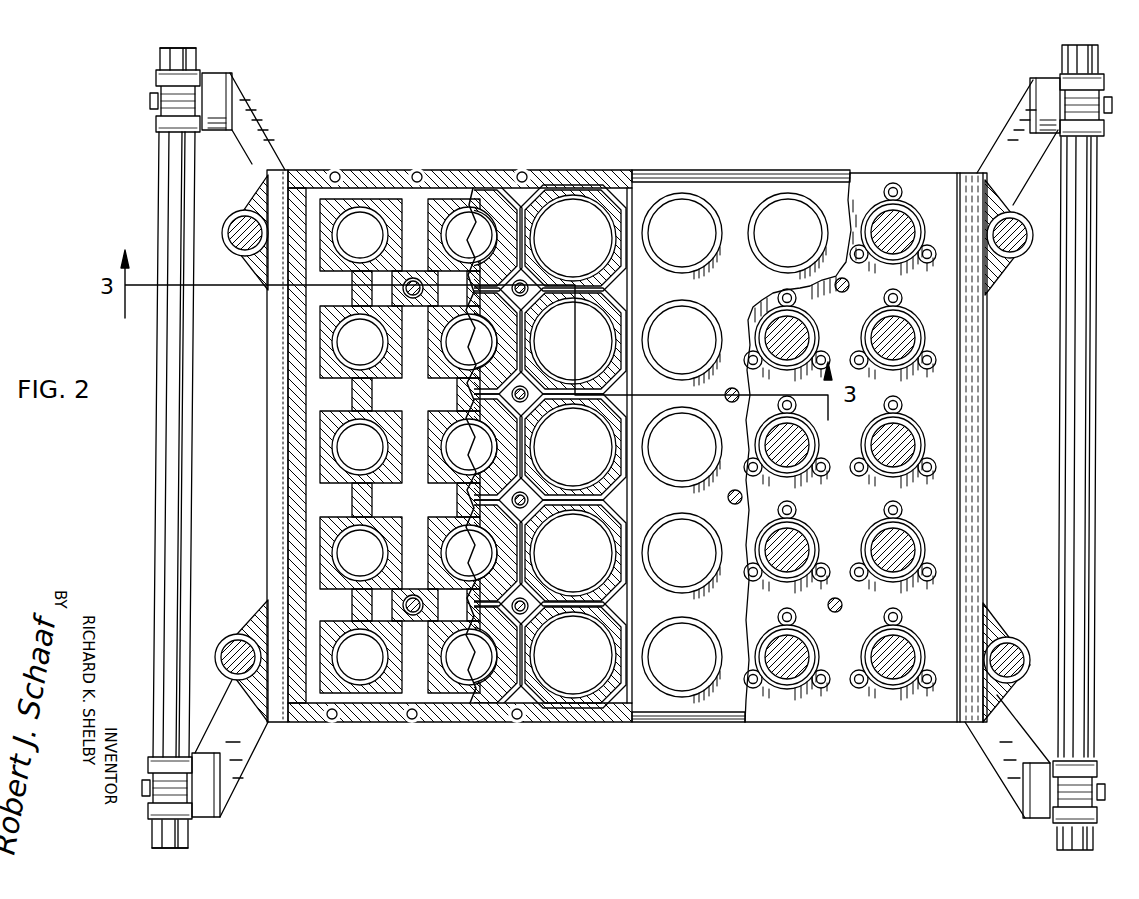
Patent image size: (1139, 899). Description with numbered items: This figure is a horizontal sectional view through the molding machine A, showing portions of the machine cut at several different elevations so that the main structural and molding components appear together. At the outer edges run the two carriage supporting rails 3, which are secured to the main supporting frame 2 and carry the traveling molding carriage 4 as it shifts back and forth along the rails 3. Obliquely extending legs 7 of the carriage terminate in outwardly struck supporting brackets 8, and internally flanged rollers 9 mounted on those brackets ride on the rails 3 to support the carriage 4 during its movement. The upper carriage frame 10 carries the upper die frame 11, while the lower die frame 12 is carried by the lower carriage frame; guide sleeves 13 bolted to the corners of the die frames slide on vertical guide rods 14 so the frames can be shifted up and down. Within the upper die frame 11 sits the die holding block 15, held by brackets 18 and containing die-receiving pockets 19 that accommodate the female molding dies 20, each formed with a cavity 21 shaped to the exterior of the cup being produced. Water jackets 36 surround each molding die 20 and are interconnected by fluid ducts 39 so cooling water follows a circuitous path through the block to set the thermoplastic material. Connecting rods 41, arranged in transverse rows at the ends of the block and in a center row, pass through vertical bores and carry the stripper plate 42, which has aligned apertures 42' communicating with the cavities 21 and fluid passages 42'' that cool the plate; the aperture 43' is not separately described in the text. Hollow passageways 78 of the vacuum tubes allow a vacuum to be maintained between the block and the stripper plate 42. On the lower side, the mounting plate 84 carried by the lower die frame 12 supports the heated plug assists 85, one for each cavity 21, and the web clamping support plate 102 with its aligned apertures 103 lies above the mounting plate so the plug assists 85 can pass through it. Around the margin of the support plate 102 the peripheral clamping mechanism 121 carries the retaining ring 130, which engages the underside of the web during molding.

The main supporting frame 2 is at (158, 596).
The carriage supporting rails 3 is at (157, 455).
The molding carriage 4 is at (989, 481).
The legs 7 is at (242, 70).
The supporting brackets 8 is at (222, 120).
The internally flanged rollers 9 is at (158, 80).
The upper carriage frame 10 is at (276, 383).
The upper die frame 11 is at (393, 168).
The lower die frame 12 is at (978, 348).
The guide sleeves 13 is at (238, 253).
The guide rods 14 is at (240, 216).
The die holding block 15 is at (346, 168).
The brackets 18 is at (258, 276).
The die-receiving pockets 19 is at (343, 456).
The molding dies 20 is at (478, 216).
The cavities 21 is at (468, 706).
The water jackets 36 is at (410, 206).
The fluid ducts 39 is at (312, 400).
The connecting rods 41 is at (413, 300).
The stripper plate 42 is at (568, 472).
The aligned apertures 42' is at (573, 477).
The fluid passages 42'' is at (636, 473).
The cell tube 43' is at (522, 412).
The hollow passageways 78 is at (524, 280).
The mounting plate 84 is at (878, 173).
The plug assists 85 is at (902, 206).
The web clamping support plate 102 is at (716, 200).
The aligned apertures 103 is at (788, 214).
The peripheral clamping mechanism 121 is at (650, 172).
The retaining ring 130 is at (740, 718).
The molding machine A is at (564, 170).